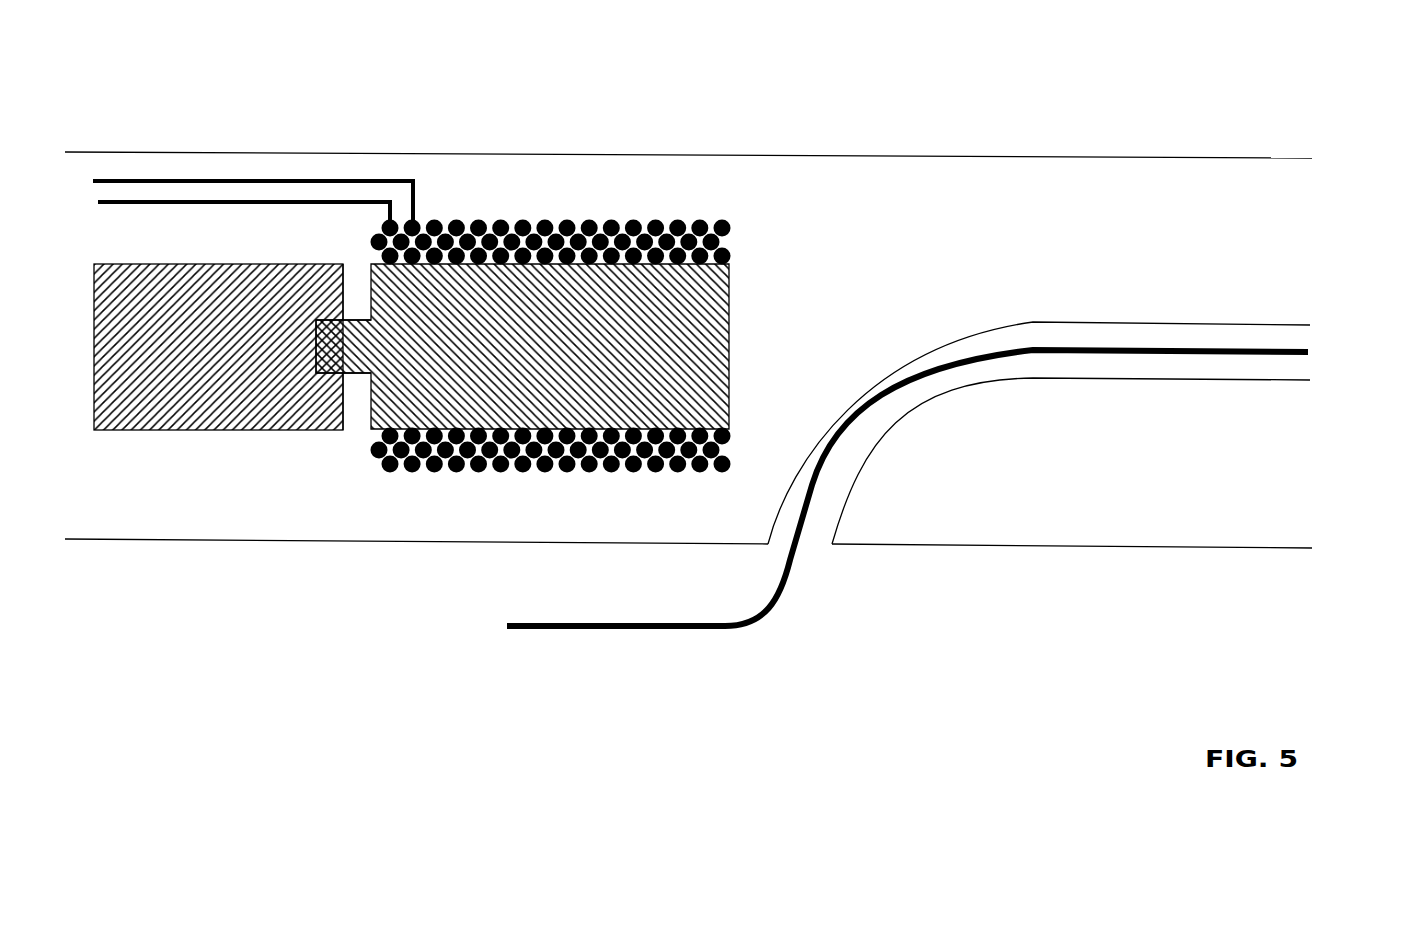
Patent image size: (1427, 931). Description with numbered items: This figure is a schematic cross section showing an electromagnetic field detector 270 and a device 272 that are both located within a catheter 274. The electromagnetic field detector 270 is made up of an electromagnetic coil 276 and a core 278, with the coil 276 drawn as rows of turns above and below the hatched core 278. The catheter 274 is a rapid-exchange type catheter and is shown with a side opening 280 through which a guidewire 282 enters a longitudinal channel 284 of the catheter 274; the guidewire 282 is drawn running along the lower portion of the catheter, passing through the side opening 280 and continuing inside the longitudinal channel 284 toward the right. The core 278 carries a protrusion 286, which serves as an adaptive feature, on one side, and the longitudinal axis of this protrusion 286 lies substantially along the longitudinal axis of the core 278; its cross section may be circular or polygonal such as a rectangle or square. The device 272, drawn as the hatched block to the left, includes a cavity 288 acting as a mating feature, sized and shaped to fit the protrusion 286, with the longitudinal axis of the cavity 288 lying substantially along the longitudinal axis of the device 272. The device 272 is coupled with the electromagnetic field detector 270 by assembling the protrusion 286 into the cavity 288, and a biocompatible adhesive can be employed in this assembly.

The electromagnetic field detector 270 is at (514, 110).
The device 272 is at (153, 430).
The catheter 274 is at (1155, 158).
The electromagnetic coil 276 is at (652, 223).
The core 278 is at (729, 293).
The side opening 280 is at (815, 550).
The guidewire 282 is at (603, 630).
The longitudinal channel 284 is at (1315, 342).
The protrusion 286 is at (353, 375).
The cavity 288 is at (317, 347).